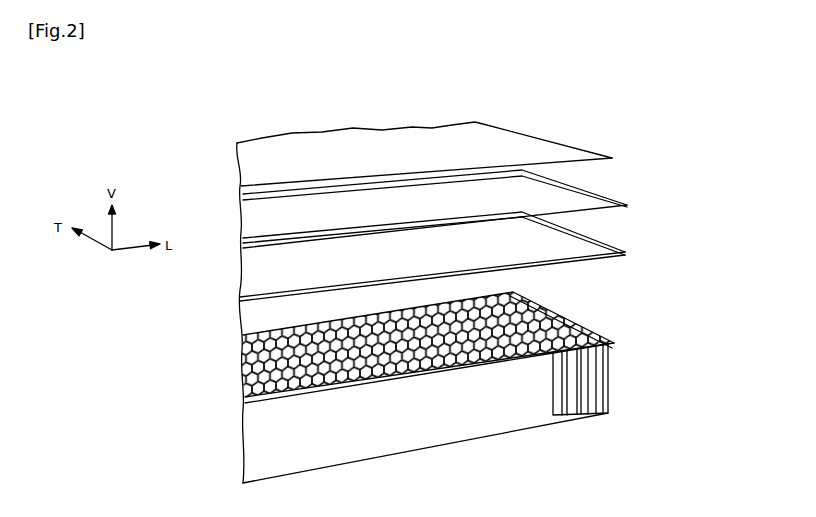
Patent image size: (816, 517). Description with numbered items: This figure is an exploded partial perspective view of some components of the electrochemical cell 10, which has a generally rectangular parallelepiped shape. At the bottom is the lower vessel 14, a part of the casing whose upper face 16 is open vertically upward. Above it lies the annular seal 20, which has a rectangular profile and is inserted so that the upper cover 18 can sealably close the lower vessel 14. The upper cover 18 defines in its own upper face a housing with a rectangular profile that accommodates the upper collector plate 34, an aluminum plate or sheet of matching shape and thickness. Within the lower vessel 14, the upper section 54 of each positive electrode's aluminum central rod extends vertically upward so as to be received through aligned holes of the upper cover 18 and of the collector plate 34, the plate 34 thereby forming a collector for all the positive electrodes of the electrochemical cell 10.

The electrochemical cell 10 is at (487, 281).
The lower vessel 14 is at (620, 370).
The upper face of the lower vessel 16 is at (556, 320).
The upper cover 18 is at (632, 196).
The annular seal 20 is at (632, 244).
The upper collector plate 34 is at (531, 132).
The upper section of the central hub 54 is at (520, 298).